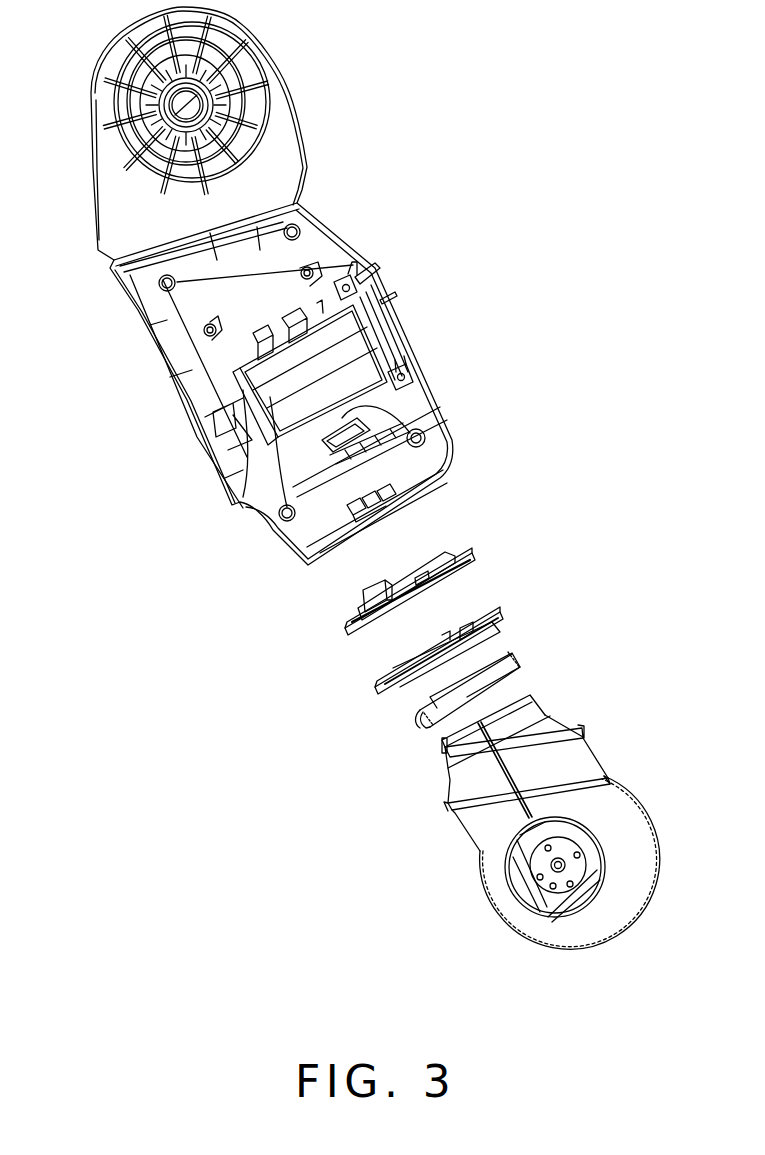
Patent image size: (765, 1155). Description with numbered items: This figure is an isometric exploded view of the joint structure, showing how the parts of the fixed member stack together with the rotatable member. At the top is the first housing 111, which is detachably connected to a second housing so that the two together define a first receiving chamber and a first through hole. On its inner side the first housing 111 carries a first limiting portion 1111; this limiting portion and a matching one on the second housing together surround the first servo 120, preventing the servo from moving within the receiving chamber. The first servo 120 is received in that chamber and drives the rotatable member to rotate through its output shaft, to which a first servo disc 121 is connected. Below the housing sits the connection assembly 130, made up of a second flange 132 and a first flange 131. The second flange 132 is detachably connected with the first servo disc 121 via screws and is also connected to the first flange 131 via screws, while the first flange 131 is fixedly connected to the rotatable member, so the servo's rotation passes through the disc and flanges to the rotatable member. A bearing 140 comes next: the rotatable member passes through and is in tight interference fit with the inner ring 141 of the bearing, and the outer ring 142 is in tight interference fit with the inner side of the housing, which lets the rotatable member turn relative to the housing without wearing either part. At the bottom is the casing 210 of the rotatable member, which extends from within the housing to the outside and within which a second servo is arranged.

The first housing 111 is at (342, 255).
The first limiting portion 1111 is at (357, 290).
The first servo 120 is at (368, 355).
The first servo disc 121 is at (420, 437).
The connection assembly 130 is at (496, 602).
The first flange 131 is at (476, 650).
The second flange 132 is at (468, 553).
The bearing 140 is at (513, 659).
The inner ring 141 is at (425, 730).
The outer ring 142 is at (417, 718).
The casing 210 is at (580, 942).